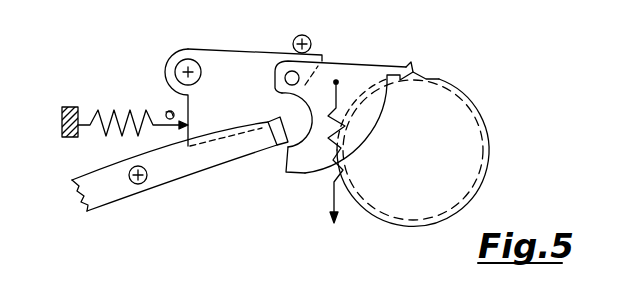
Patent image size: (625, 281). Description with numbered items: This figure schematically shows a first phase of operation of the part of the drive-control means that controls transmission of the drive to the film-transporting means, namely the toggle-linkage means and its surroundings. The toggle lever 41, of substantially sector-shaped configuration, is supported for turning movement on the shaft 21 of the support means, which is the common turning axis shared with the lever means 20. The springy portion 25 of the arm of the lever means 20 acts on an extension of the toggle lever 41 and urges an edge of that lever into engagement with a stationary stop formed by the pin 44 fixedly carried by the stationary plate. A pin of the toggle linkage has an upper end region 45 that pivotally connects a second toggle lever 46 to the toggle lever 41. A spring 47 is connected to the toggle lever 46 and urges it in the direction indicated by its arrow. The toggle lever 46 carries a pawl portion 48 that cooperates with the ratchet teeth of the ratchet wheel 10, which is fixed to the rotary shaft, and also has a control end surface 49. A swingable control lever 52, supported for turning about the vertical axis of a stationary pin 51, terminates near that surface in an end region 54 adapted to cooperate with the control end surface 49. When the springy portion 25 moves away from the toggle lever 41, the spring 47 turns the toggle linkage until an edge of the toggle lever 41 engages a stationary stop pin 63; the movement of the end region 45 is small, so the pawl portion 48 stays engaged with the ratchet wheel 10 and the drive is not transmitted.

The ratchet wheel 10 is at (413, 152).
The lever means 20 is at (61, 130).
The shaft 21 is at (190, 69).
The springy portion 25 is at (106, 111).
The toggle lever 41 is at (256, 99).
The pin 44 is at (309, 39).
The upper end region 45 is at (285, 91).
The second toggle lever 46 is at (356, 75).
The spring 47 is at (338, 220).
The pawl portion 48 is at (411, 71).
The control end surface 49 is at (284, 173).
The stationary pin 51 is at (139, 184).
The control lever 52 is at (173, 174).
The end region 54 is at (270, 143).
The stationary stop pin 63 is at (166, 112).